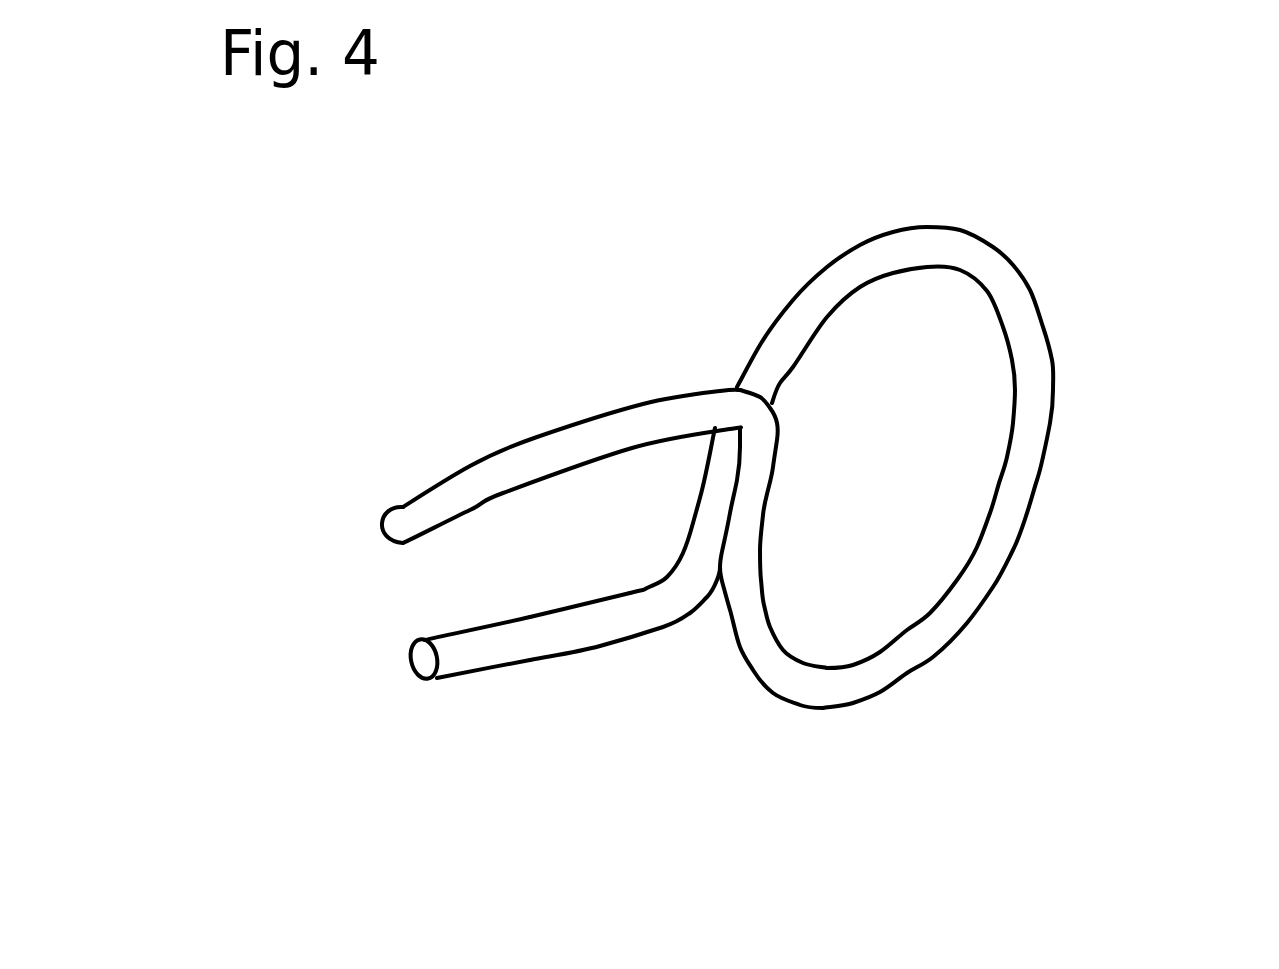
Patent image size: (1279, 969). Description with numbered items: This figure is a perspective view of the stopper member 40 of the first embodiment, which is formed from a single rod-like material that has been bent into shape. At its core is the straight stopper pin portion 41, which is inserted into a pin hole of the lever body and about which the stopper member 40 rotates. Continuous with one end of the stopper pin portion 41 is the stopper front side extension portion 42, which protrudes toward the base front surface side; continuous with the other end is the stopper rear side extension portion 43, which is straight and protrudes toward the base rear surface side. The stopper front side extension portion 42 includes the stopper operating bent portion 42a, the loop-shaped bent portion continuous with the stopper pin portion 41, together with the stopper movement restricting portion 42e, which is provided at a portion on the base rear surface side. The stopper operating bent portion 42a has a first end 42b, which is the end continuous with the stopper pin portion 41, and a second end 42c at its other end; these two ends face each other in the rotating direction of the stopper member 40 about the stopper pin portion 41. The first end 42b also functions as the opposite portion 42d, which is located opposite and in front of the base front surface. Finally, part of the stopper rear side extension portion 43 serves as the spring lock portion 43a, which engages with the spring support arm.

The stopper member 40 is at (268, 233).
The stopper pin portion 41 is at (598, 627).
The stopper front side extension portion 42 is at (1077, 283).
The stopper operating bent portion 42a is at (1022, 467).
The first end 42b is at (731, 637).
The second end 42c is at (745, 523).
The opposite portion 42d is at (712, 507).
The stopper movement restricting portion 42e is at (453, 497).
The stopper rear side extension portion 43 is at (472, 660).
The spring lock portion 43a is at (463, 630).